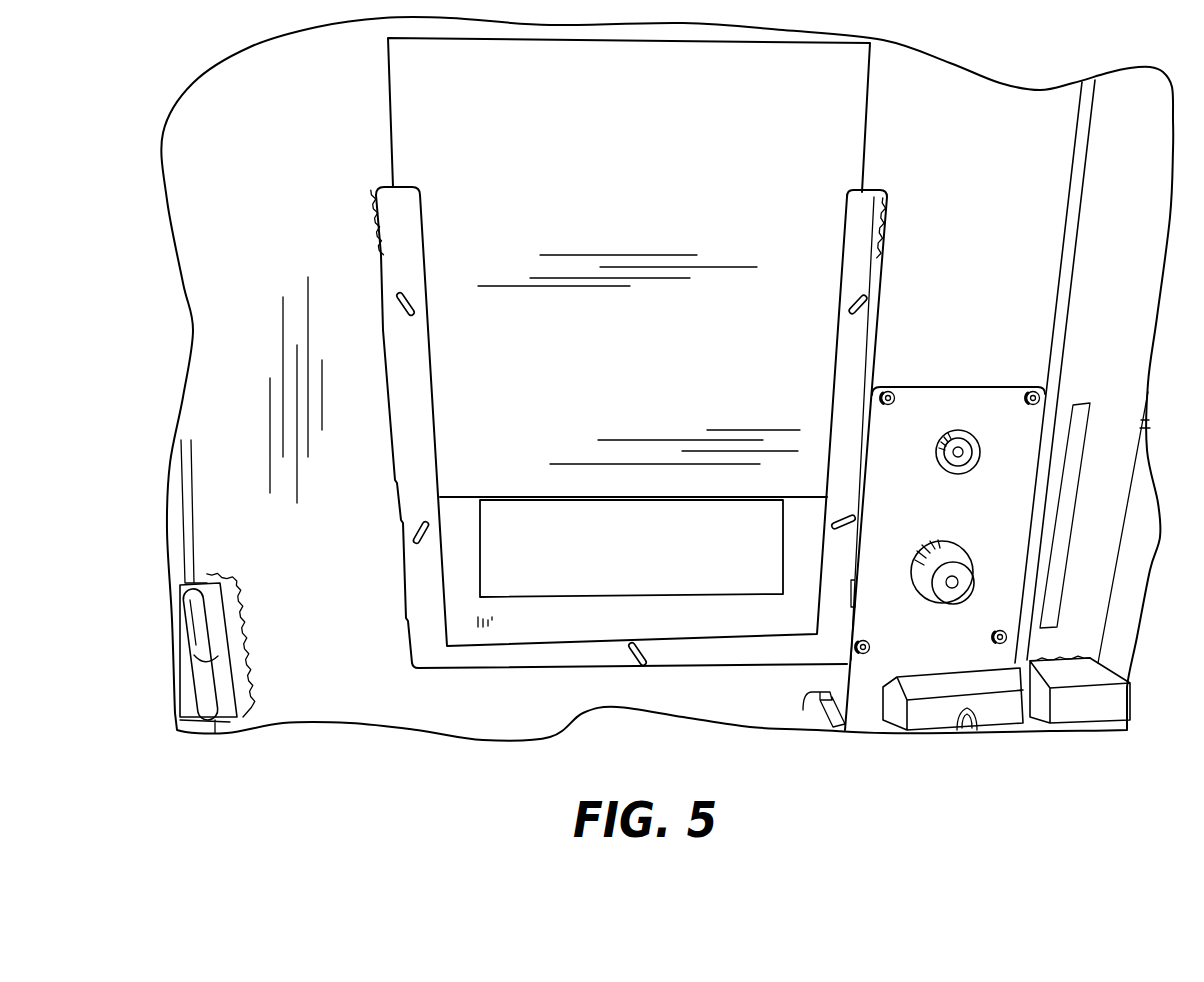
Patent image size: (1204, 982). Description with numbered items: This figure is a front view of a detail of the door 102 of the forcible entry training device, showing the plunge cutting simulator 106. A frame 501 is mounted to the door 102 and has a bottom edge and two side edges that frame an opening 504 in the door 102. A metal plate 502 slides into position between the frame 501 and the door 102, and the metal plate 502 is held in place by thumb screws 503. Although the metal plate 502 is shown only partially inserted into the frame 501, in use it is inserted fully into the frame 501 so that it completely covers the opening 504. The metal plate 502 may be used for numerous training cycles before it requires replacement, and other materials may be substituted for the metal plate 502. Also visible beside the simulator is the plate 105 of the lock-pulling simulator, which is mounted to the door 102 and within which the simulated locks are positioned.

The door 102 is at (999, 312).
The plate 105 is at (1002, 524).
The plunge cutting simulator 106 is at (367, 557).
The frame 501 is at (430, 655).
The metal plate 502 is at (818, 120).
The thumb screws 503 is at (423, 524).
The opening 504 is at (597, 567).